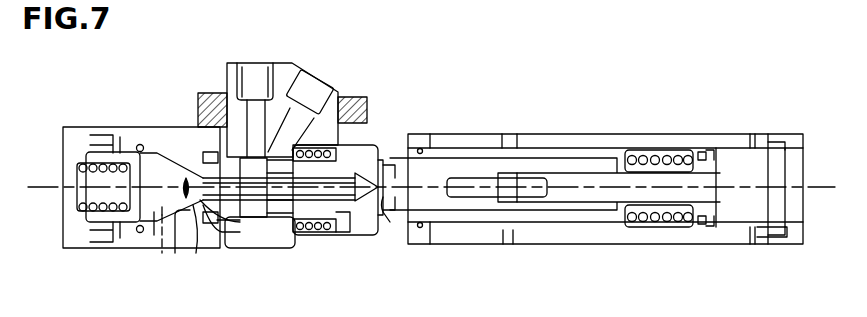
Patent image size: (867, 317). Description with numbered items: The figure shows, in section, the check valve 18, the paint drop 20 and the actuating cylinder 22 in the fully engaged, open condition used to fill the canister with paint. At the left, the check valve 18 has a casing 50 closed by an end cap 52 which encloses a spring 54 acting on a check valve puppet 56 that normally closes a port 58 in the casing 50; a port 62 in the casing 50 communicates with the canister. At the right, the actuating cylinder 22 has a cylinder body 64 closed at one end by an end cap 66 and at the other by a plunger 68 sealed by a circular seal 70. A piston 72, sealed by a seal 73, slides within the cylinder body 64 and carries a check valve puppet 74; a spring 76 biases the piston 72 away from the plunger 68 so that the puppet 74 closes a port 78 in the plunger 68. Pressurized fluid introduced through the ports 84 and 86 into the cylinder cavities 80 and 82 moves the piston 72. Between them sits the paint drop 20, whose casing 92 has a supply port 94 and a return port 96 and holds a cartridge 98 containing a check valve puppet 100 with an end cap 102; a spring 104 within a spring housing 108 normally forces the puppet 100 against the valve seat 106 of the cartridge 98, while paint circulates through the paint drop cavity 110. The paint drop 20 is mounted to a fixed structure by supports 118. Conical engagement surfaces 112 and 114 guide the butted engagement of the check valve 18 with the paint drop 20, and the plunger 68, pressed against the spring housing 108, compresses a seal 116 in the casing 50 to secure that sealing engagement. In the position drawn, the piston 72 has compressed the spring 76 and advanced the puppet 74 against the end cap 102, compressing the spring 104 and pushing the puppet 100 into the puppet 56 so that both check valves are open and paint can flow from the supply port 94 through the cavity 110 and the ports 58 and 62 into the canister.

The check valve 18 is at (85, 126).
The paint drop 20 is at (279, 56).
The actuating cylinder 22 is at (641, 112).
The casing 50 is at (112, 126).
The end cap 52 is at (66, 134).
The spring 54 is at (80, 165).
The check valve puppet 56 is at (128, 126).
The port 58 is at (183, 235).
The port 62 is at (162, 253).
The cylinder body 64 is at (596, 143).
The end cap 66 is at (797, 140).
The plunger 68 is at (500, 163).
The circular seal 70 is at (432, 148).
The piston 72 is at (710, 217).
The seal 73 is at (710, 150).
The check valve puppet 74 is at (386, 170).
The spring 76 is at (652, 150).
The port 78 is at (410, 220).
The cylinder cavity 80 is at (745, 230).
The cylinder cavity 82 is at (682, 150).
The port 84 is at (769, 246).
The port 86 is at (510, 240).
The casing 92 is at (338, 96).
The supply port 94 is at (252, 68).
The return port 96 is at (313, 83).
The cartridge 98 is at (188, 178).
The check valve puppet 100 is at (195, 165).
The end cap 102 is at (352, 232).
The spring 104 is at (326, 234).
The valve seat 106 is at (214, 242).
The spring housing 108 is at (378, 143).
The paint drop cavity 110 is at (265, 217).
The conical engagement surface 112 is at (214, 152).
The conical engagement surface 114 is at (216, 232).
The seal 116 is at (197, 240).
The support 118 is at (352, 98).